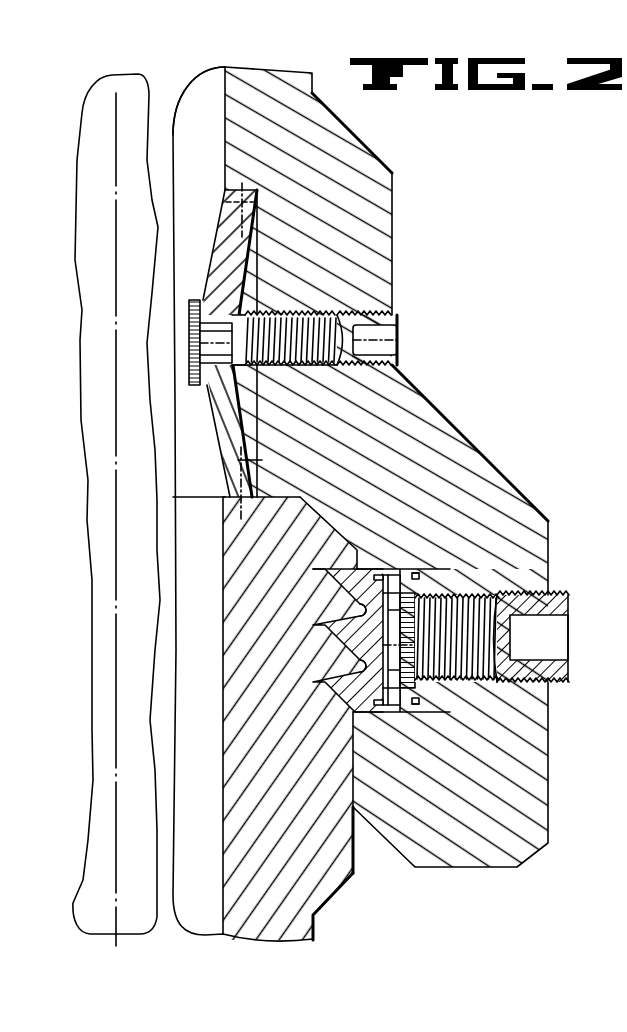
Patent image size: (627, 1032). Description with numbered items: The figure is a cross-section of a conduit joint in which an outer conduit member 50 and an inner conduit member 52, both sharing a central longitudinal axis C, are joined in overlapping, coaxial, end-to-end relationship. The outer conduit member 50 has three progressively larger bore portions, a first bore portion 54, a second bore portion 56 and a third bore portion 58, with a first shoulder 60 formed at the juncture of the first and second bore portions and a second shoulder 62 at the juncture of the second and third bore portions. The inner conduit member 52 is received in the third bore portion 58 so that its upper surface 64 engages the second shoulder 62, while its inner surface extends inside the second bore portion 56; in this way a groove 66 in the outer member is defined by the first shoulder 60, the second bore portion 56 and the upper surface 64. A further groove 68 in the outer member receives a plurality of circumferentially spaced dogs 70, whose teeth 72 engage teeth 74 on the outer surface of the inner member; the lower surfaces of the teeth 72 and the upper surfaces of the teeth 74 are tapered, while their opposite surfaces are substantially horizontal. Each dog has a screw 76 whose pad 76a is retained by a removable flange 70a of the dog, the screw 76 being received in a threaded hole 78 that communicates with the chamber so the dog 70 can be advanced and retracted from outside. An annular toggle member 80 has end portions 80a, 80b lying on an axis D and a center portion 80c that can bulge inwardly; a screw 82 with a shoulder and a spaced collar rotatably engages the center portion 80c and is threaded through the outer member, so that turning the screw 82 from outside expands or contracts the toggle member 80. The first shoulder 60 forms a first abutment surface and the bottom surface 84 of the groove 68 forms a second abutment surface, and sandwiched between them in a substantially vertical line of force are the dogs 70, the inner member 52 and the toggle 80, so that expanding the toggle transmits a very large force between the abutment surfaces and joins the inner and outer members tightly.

The central longitudinal axis C is at (116, 113).
The axis D is at (263, 460).
The outer conduit member 50 is at (397, 172).
The inner conduit member 52 is at (350, 885).
The first bore portion 54 is at (225, 98).
The second bore portion 56 is at (248, 268).
The third bore portion 58 is at (351, 745).
The first shoulder 60 is at (257, 194).
The second shoulder 62 is at (287, 503).
The upper surface 64 is at (266, 496).
The groove 66 is at (250, 389).
The groove 68 is at (447, 590).
The dogs 70 is at (399, 609).
The removable flange 70a is at (397, 567).
The teeth 72 is at (317, 569).
The teeth 74 is at (348, 611).
The screw 76 is at (530, 596).
The pad 76a is at (413, 570).
The threaded hole 78 is at (549, 683).
The annular toggle member 80 is at (249, 352).
The end portion 80a is at (218, 210).
The end portion 80b is at (233, 486).
The center portion 80c is at (237, 308).
The screw 82 is at (365, 312).
The bottom surface 84 is at (436, 704).